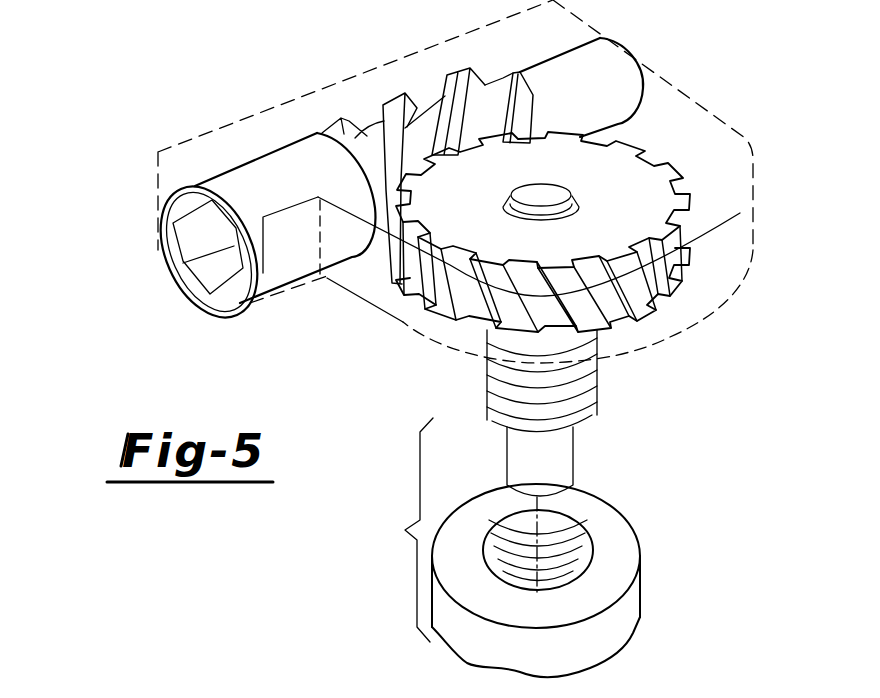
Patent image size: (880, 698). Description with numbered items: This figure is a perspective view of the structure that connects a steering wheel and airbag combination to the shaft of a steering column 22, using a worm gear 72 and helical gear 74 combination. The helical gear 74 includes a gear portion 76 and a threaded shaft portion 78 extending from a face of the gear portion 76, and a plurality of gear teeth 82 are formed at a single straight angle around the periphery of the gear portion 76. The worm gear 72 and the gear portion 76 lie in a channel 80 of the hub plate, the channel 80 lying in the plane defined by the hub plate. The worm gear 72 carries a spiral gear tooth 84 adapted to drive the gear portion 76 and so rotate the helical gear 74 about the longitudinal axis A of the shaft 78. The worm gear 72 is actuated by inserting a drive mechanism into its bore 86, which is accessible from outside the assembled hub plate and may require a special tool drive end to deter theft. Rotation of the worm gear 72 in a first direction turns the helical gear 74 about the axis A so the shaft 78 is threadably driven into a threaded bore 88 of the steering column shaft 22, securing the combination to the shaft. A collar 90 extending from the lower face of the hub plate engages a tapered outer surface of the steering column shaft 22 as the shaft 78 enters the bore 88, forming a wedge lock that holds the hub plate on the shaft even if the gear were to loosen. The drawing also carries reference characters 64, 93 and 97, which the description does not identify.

The steering column shaft 22 is at (620, 617).
The socket 64 is at (147, 232).
The worm gear 72 is at (617, 87).
The helical gear 74 is at (598, 390).
The gear portion 76 is at (650, 187).
The threaded shaft portion 78 is at (553, 460).
The channel 80 is at (736, 206).
The gear teeth 82 is at (420, 293).
The spiral gear tooth 84 is at (467, 68).
The bore 86 is at (207, 280).
The threaded bore 88 is at (551, 580).
The collar 90 is at (325, 697).
The boss 93 is at (560, 185).
The member 97 is at (428, 694).
The longitudinal axis A is at (573, 507).